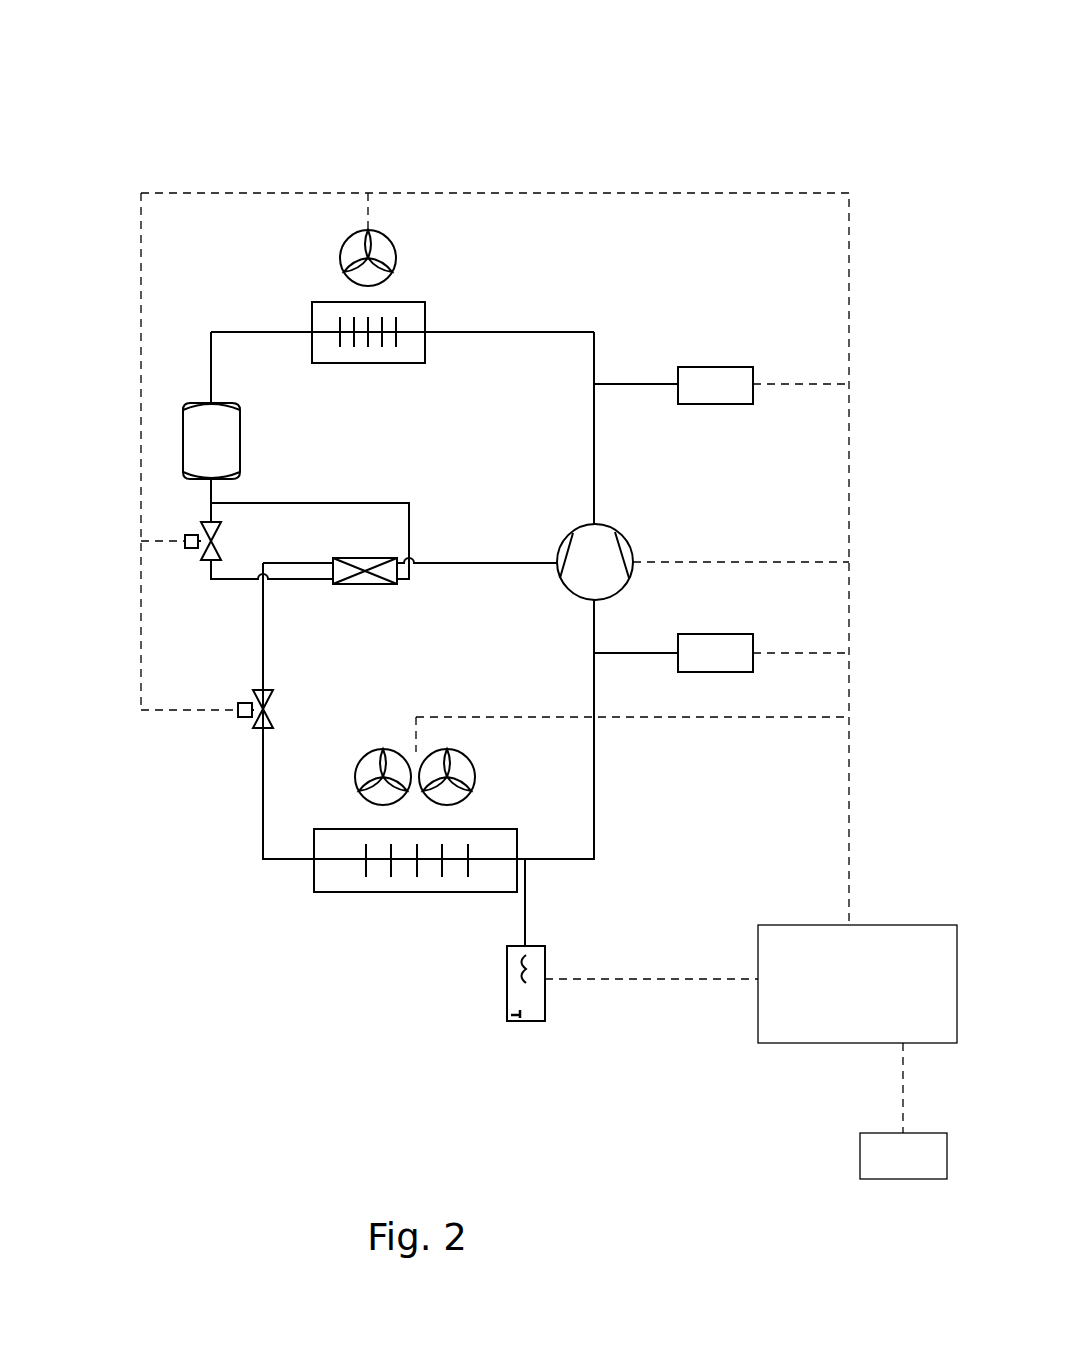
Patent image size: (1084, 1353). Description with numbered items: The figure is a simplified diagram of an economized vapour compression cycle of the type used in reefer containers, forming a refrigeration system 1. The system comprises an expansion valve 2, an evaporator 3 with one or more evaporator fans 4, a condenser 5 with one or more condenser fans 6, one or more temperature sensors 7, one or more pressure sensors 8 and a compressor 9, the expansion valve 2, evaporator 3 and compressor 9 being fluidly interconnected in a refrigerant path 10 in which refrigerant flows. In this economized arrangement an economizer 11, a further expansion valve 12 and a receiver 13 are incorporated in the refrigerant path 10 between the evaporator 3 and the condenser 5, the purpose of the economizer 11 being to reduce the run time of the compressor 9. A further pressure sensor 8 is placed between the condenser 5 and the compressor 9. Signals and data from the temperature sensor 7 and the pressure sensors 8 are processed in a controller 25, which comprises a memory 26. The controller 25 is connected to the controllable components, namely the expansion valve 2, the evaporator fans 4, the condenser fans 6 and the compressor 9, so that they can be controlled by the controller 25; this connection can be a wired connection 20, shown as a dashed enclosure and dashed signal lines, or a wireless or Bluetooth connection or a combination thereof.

The refrigeration system 1 is at (625, 142).
The wired connection 20 is at (334, 193).
The condenser 5 is at (345, 302).
The condenser fans 6 is at (383, 232).
The refrigerant path 10 is at (540, 332).
The receiver 13 is at (190, 405).
The further expansion valve 12 is at (188, 536).
The economizer 11 is at (385, 584).
The compressor 9 is at (625, 537).
The pressure sensors 8 is at (737, 367).
The expansion valve 2 is at (238, 703).
The evaporator fans 4 is at (407, 752).
The evaporator 3 is at (343, 892).
The temperature sensors 7 is at (507, 983).
The controller 25 is at (843, 1043).
The memory 26 is at (870, 1179).